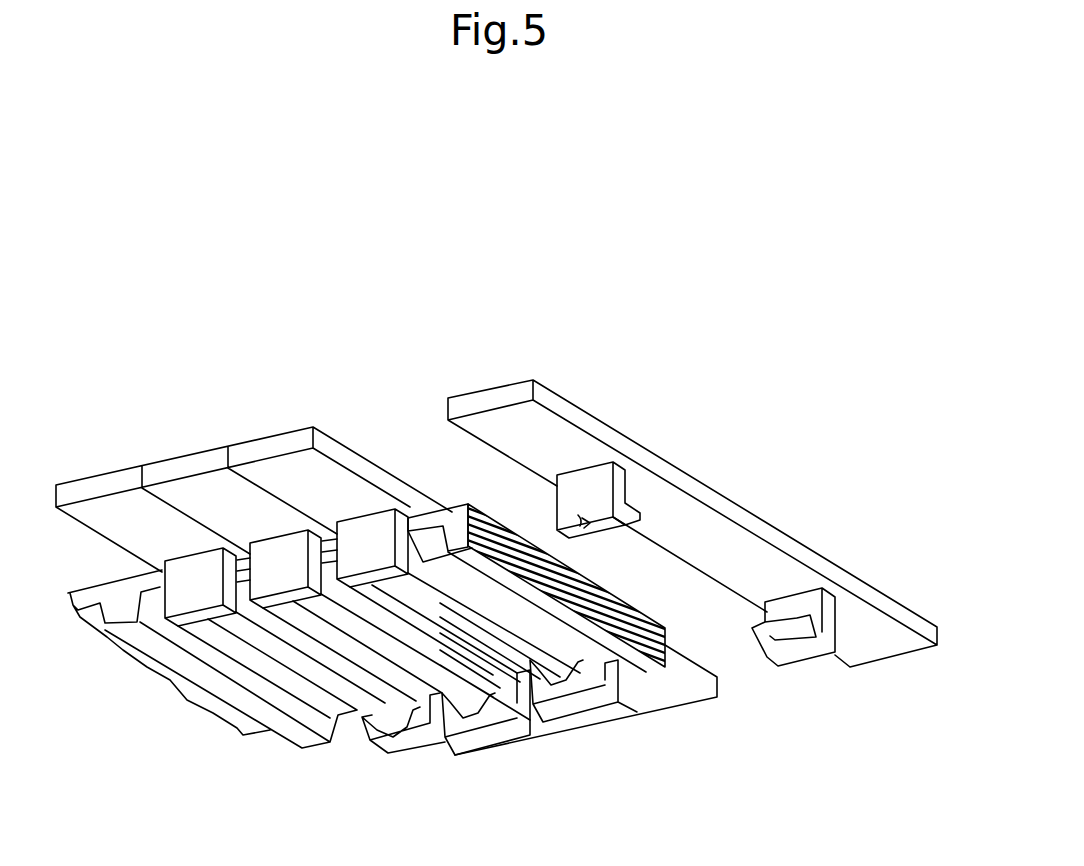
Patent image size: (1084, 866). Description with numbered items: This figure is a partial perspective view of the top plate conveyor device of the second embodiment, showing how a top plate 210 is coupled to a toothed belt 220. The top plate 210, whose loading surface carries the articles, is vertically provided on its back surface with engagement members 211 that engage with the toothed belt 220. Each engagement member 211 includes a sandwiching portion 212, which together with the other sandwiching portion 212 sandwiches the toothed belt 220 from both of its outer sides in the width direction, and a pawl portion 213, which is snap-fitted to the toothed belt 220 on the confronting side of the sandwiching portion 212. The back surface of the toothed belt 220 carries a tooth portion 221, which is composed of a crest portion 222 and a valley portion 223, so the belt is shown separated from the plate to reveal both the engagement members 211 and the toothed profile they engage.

The top plate 210 is at (587, 420).
The engagement member 211 is at (705, 529).
The sandwiching portion 212 is at (620, 475).
The pawl portion 213 is at (600, 522).
The toothed belt 220 is at (640, 643).
The tooth portion 221 is at (352, 707).
The crest portion 222 is at (513, 650).
The valley portion 223 is at (568, 633).